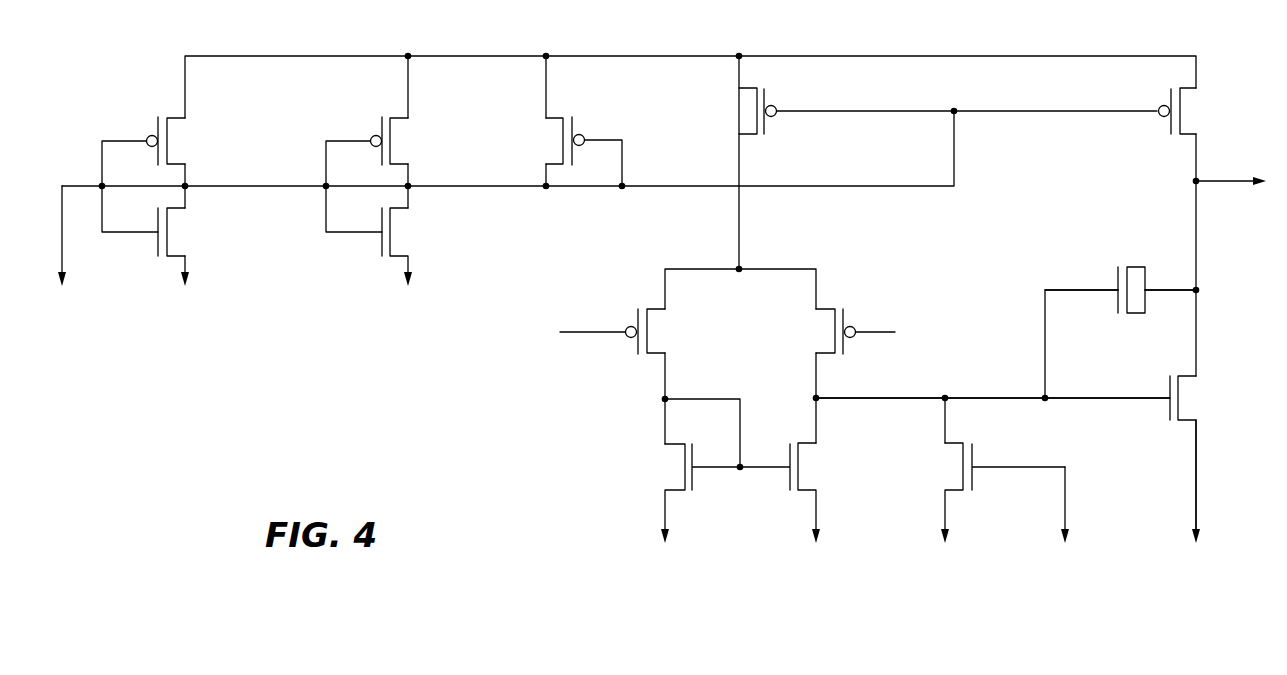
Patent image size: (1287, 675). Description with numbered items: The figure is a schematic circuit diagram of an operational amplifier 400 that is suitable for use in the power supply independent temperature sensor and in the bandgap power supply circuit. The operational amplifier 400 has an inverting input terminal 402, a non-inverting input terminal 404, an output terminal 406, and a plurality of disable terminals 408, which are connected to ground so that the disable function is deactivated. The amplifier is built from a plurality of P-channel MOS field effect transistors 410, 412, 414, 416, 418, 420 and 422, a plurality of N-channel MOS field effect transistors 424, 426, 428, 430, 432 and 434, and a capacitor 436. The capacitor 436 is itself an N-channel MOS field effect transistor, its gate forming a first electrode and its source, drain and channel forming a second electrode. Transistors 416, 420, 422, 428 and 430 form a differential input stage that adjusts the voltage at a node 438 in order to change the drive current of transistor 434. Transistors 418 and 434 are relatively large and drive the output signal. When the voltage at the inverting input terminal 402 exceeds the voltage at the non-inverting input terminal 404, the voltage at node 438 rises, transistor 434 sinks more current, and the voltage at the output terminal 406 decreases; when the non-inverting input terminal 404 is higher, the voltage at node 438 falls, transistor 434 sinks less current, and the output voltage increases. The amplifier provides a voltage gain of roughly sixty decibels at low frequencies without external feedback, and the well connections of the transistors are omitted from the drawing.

The operational amplifier 400 is at (356, 372).
The inverting input terminal 402 is at (592, 334).
The non-inverting input terminal 404 is at (876, 334).
The output terminal 406 is at (1228, 184).
The disable terminals 408 is at (63, 238).
The P-channel MOS field effect transistor 410 is at (157, 117).
The P-channel MOS field effect transistor 412 is at (381, 118).
The P-channel MOS field effect transistor 414 is at (574, 122).
The P-channel MOS field effect transistor 416 is at (767, 130).
The P-channel MOS field effect transistor 418 is at (1170, 92).
The P-channel MOS field effect transistor 420 is at (636, 309).
The P-channel MOS field effect transistor 422 is at (846, 311).
The N-channel MOS field effect transistor 424 is at (168, 226).
The N-channel MOS field effect transistor 426 is at (380, 249).
The N-channel MOS field effect transistor 428 is at (680, 467).
The N-channel MOS field effect transistor 430 is at (790, 484).
The N-channel MOS field effect transistor 432 is at (972, 484).
The N-channel MOS field effect transistor 434 is at (1168, 412).
The capacitor 436 is at (1116, 288).
The node 438 is at (926, 402).